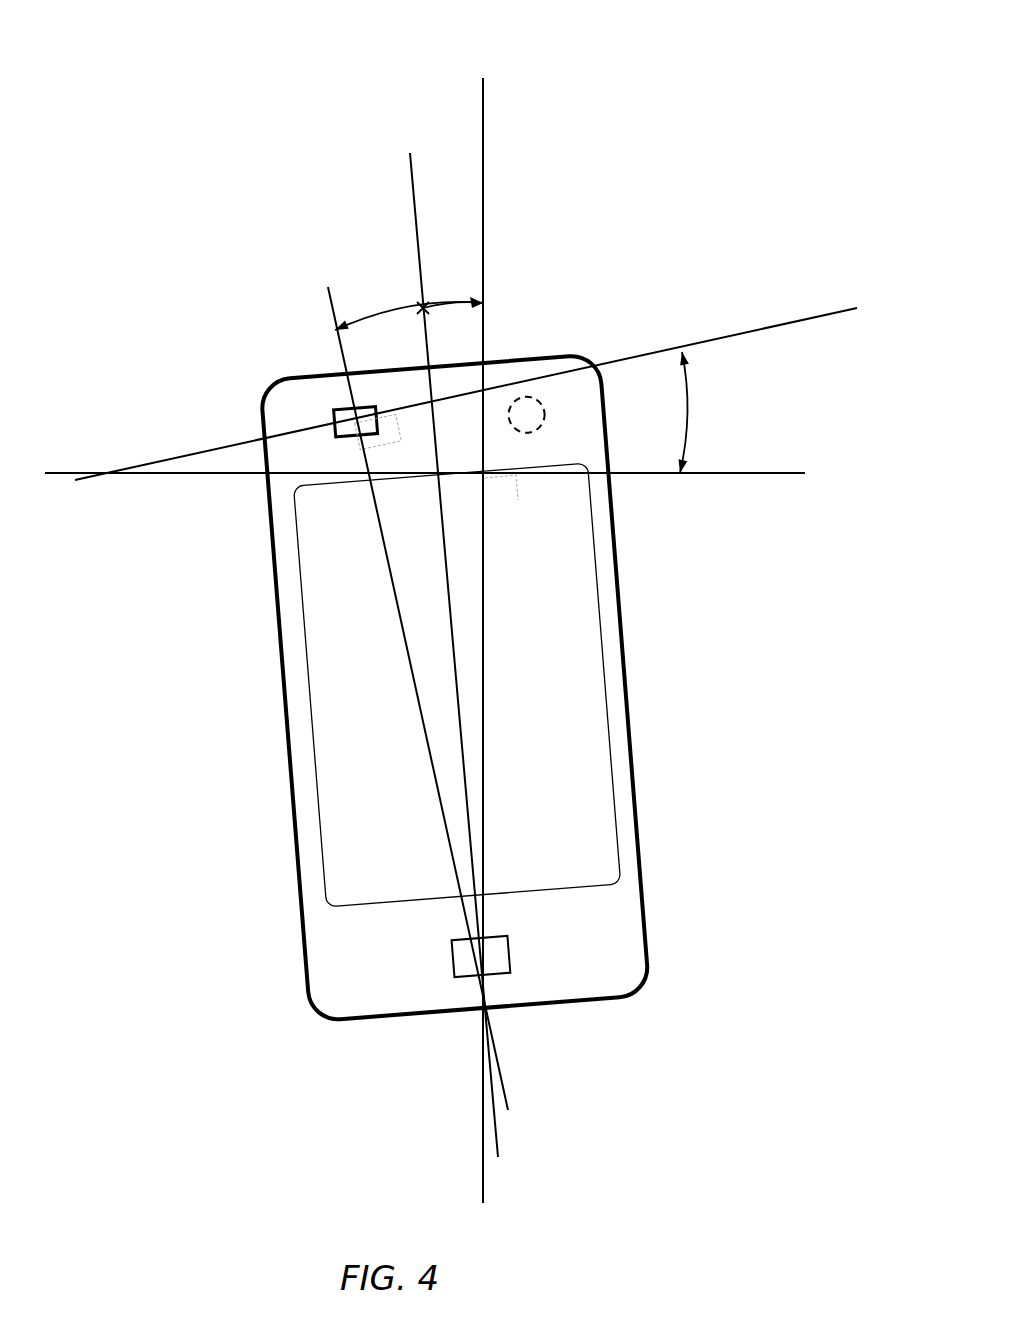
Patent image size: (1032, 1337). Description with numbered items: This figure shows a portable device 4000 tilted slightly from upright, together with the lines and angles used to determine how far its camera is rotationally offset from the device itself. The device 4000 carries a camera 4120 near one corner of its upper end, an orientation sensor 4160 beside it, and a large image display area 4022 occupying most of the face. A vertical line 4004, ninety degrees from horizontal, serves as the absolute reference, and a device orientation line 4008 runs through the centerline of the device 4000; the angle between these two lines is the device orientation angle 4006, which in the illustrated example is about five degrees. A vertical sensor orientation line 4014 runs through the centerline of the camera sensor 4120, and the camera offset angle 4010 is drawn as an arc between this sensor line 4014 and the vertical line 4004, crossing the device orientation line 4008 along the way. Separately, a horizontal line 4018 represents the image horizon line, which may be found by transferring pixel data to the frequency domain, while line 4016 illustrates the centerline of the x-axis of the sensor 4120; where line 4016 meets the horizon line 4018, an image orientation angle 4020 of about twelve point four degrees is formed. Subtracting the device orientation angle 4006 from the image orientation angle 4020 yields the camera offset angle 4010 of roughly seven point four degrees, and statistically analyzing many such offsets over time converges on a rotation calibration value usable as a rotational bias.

The portable device 4000 is at (280, 697).
The vertical line 4004 is at (485, 237).
The device orientation angle 4006 is at (459, 305).
The device orientation line 4008 is at (415, 217).
The camera offset angle 4010 is at (383, 313).
The vertical sensor orientation line 4014 is at (330, 303).
The x-axis centerline of the sensor 4016 is at (480, 393).
The image horizon line 4018 is at (762, 477).
The image orientation angle 4020 is at (688, 435).
The image display area 4022 is at (617, 767).
The camera 4120 is at (340, 410).
The orientation sensor 4160 is at (537, 397).